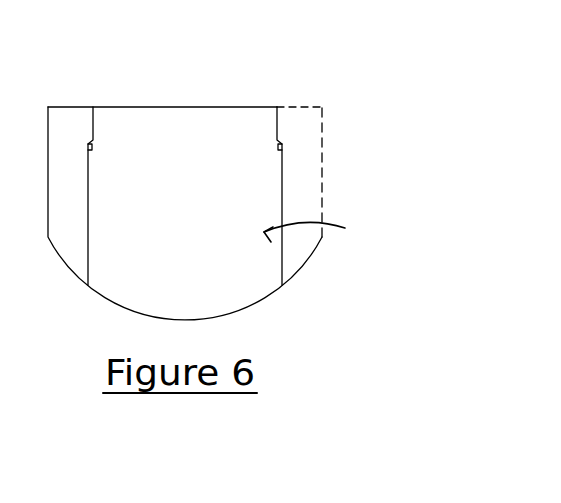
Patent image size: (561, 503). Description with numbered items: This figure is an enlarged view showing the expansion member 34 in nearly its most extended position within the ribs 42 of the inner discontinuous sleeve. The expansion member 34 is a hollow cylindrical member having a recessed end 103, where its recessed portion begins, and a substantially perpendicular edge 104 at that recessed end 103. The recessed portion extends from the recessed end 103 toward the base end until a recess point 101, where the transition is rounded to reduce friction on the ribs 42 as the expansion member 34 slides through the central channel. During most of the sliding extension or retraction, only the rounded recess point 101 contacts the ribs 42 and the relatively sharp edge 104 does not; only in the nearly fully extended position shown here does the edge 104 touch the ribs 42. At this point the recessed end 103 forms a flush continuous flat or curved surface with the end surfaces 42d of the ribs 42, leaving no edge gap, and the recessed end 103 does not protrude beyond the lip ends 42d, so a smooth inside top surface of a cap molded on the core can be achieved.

The rib 42 is at (58, 173).
The lip end 42d is at (68, 106).
The recessed end 103 is at (244, 105).
The perpendicular edge 104 is at (95, 106).
The recess point 101 is at (283, 153).
The expansion member 34 is at (318, 232).